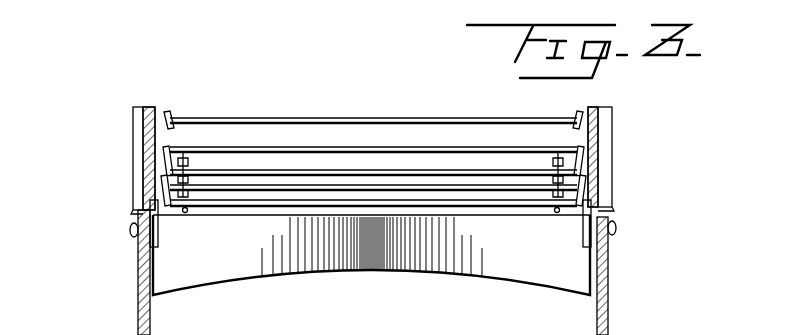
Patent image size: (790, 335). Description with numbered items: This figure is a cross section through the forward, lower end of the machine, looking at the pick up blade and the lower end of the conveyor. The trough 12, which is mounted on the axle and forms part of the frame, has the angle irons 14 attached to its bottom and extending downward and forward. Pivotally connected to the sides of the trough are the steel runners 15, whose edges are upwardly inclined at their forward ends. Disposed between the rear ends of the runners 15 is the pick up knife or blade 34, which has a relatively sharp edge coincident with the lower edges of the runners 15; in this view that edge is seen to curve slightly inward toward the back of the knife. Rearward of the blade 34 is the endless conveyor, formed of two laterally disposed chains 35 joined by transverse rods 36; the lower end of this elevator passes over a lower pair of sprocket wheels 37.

The trough 12 is at (170, 182).
The angle irons 14 is at (133, 128).
The steel runners 15 is at (137, 308).
The pick up knife 34 is at (470, 265).
The chains 35 is at (577, 138).
The transverse rods 36 is at (412, 117).
The lower sprocket wheels 37 is at (188, 212).